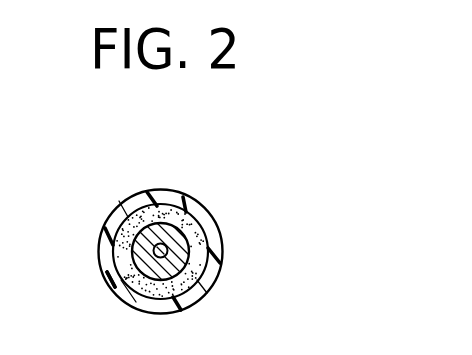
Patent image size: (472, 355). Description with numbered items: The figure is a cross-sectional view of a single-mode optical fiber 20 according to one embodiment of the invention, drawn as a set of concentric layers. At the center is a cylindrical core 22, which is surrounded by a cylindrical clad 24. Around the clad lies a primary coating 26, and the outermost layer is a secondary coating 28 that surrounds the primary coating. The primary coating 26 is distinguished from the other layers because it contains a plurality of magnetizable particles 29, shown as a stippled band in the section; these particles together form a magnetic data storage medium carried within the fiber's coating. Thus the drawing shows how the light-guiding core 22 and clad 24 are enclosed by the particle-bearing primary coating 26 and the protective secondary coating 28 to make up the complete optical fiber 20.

The single-mode optical fiber 20 is at (248, 207).
The cylindrical core 22 is at (164, 244).
The cylindrical clad 24 is at (190, 248).
The primary coating 26 is at (187, 197).
The secondary coating 28 is at (113, 227).
The magnetizable particles 29 is at (113, 283).